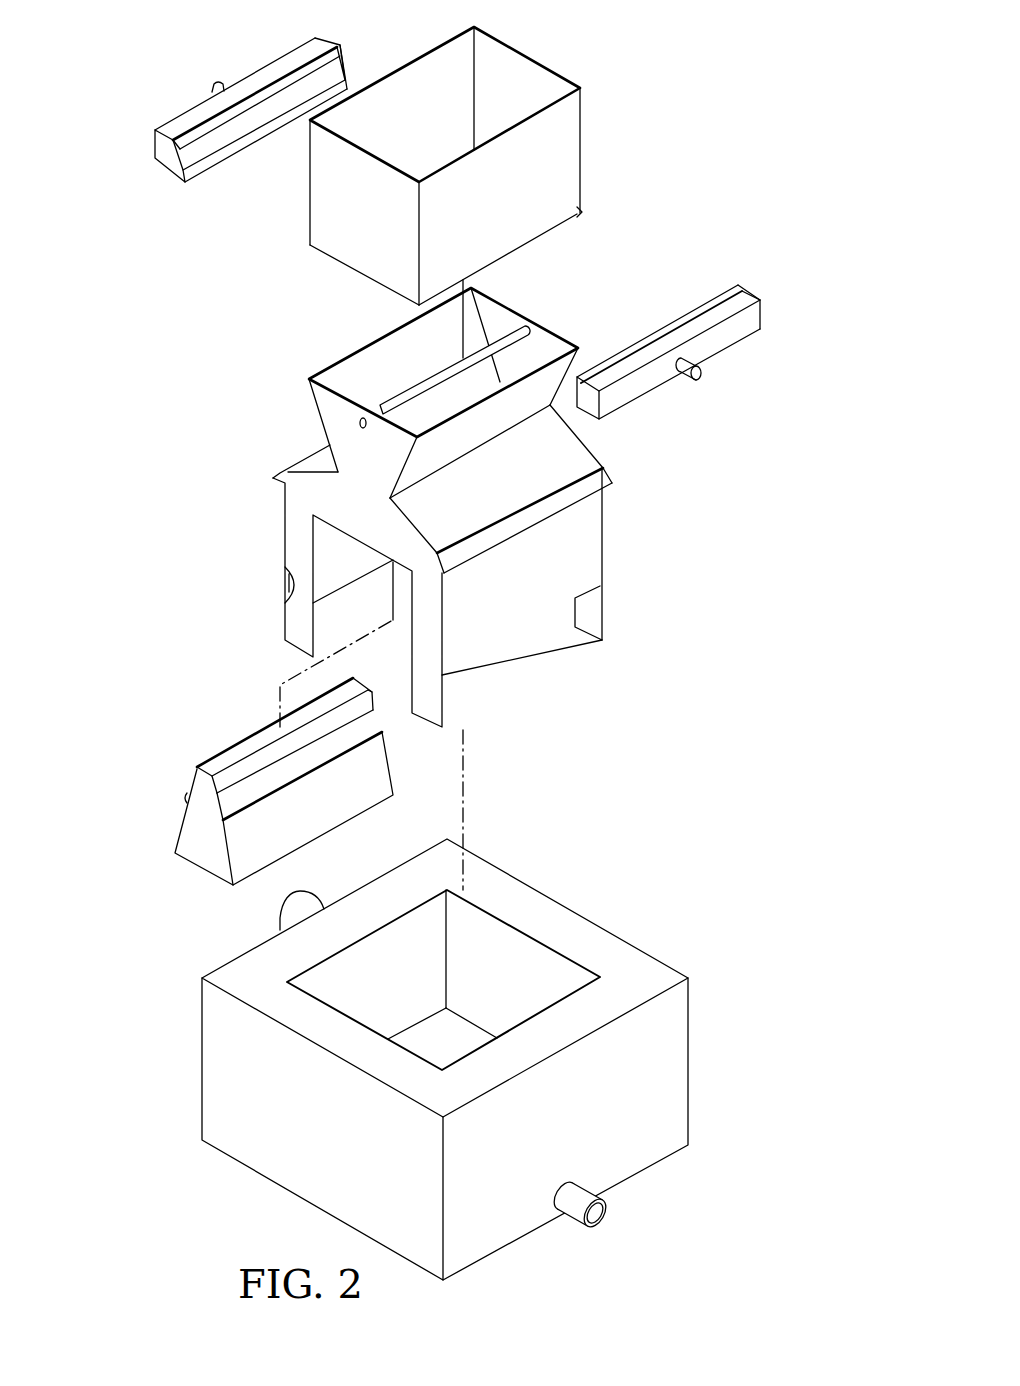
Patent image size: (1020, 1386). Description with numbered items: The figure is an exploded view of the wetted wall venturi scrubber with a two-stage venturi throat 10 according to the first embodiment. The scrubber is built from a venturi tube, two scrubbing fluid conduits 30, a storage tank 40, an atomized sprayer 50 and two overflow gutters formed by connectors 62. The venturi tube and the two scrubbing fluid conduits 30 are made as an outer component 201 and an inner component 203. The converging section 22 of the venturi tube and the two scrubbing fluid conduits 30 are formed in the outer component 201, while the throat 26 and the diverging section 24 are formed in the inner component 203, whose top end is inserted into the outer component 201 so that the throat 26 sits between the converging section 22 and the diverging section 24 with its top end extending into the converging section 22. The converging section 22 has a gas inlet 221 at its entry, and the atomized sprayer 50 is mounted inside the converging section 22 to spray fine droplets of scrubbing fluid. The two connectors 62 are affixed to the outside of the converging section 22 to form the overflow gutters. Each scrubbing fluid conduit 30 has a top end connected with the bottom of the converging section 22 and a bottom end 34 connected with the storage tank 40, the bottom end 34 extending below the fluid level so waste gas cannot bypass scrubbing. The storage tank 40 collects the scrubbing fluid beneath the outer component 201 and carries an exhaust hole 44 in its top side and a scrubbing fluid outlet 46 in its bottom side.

The wetted wall venturi scrubber with a 2-stage venturi throat 10 is at (119, 108).
The converging section 22 is at (333, 418).
The gas inlet 221 is at (543, 94).
The diverging section 24 is at (335, 808).
The throat 26 is at (355, 706).
The scrubbing fluid conduits 30 is at (290, 548).
The bottom end 34 is at (332, 580).
The storage tank 40 is at (443, 1071).
The exhaust hole 44 is at (275, 921).
The scrubbing fluid outlet 46 is at (564, 1207).
The atomized sprayer 50 is at (396, 405).
The connectors 62 is at (167, 157).
The outer component 201 is at (461, 507).
The inner component 203 is at (297, 780).